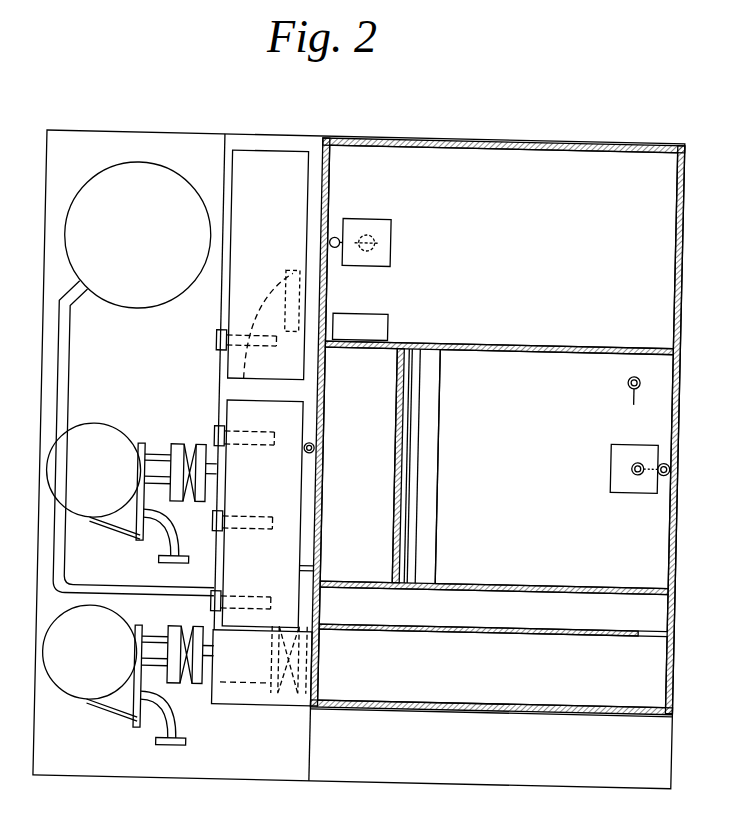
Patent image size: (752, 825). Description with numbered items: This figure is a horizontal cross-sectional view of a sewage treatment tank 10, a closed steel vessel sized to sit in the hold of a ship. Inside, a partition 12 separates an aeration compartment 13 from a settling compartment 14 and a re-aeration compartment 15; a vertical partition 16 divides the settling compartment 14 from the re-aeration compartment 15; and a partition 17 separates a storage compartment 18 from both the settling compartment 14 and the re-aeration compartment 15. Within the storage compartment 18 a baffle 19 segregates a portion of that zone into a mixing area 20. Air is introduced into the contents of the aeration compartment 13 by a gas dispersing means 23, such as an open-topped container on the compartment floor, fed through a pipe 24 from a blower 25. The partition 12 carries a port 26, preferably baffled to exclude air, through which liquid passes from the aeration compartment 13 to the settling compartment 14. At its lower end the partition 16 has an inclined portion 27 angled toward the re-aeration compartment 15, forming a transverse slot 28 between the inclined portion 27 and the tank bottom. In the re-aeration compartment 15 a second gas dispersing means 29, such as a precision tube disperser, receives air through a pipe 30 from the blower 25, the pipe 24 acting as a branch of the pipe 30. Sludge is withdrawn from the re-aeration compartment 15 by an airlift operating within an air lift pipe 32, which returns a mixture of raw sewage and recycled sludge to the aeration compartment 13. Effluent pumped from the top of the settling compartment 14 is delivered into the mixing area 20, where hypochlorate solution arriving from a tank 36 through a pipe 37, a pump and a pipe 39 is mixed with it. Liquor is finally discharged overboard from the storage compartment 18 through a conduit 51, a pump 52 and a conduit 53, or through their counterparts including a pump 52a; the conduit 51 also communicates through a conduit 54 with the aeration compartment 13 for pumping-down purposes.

The tank 10 is at (584, 125).
The partition 12 is at (504, 335).
The aeration compartment 13 is at (503, 240).
The settling compartment 14 is at (343, 476).
The re-aeration compartment 15 is at (498, 453).
The partition 16 is at (401, 492).
The partition 17 is at (499, 575).
The storage compartment 18 is at (595, 661).
The baffle 19 is at (473, 623).
The mixing area 20 is at (601, 608).
The gas dispersing means 23 is at (393, 225).
The pipe 24 is at (339, 243).
The blower 25 is at (251, 218).
The port 26 is at (361, 339).
The inclined portion 27 is at (428, 336).
The transverse slot 28 is at (446, 491).
The gas dispersing means 29 is at (618, 463).
The pipe 30 is at (319, 440).
The air lift pipe 32 is at (632, 405).
The tank 36 is at (126, 251).
The pipe 37 is at (80, 412).
The pipe 39 is at (320, 559).
The conduit 51 is at (212, 686).
The pump 52 is at (89, 697).
The pump 52a is at (95, 515).
The conduit 53 is at (179, 561).
The conduit 54 is at (235, 357).